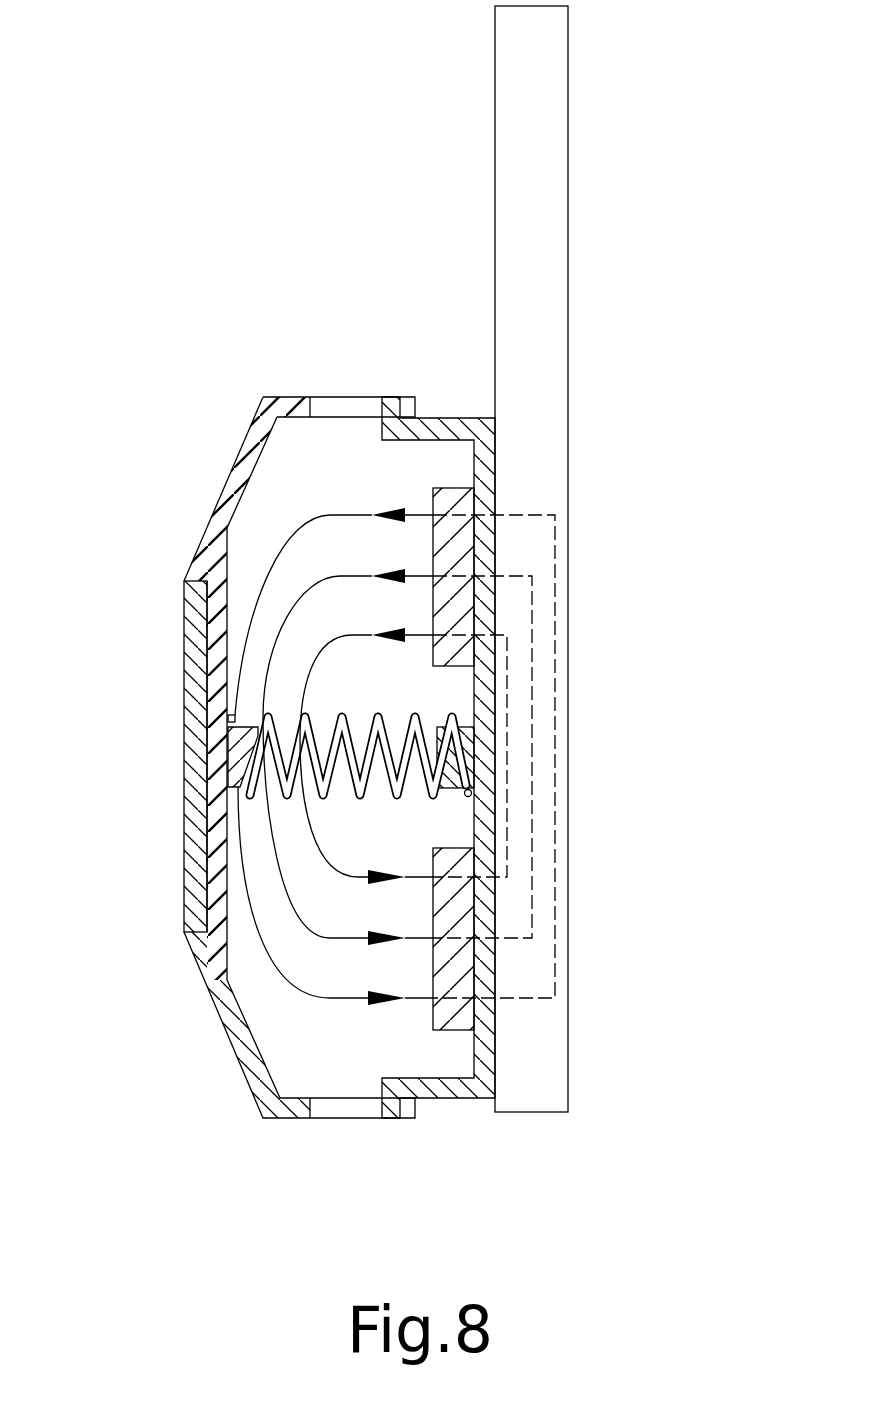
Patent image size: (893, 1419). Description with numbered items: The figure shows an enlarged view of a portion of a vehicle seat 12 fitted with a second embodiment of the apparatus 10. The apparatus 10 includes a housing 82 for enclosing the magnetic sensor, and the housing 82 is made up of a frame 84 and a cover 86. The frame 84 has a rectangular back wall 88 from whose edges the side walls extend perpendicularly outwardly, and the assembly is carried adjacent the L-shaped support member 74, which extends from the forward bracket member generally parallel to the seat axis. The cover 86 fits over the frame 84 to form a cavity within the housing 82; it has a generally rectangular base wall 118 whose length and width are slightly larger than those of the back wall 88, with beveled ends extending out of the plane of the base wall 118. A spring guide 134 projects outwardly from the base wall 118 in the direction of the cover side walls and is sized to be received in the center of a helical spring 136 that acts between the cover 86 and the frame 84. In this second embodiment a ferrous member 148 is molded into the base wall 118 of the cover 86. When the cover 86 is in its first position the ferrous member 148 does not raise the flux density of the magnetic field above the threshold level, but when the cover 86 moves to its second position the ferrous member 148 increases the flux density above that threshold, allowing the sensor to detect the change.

The apparatus 10 is at (376, 641).
The vehicle seat 12 is at (234, 832).
The L-shaped support member 74 is at (548, 226).
The housing 82 is at (193, 1047).
The frame 84 is at (440, 400).
The cover 86 is at (193, 460).
The back wall 88 is at (483, 1050).
The base wall 118 is at (220, 822).
The spring guide 134 is at (243, 747).
The helical spring 136 is at (342, 720).
The ferrous member 148 is at (197, 685).